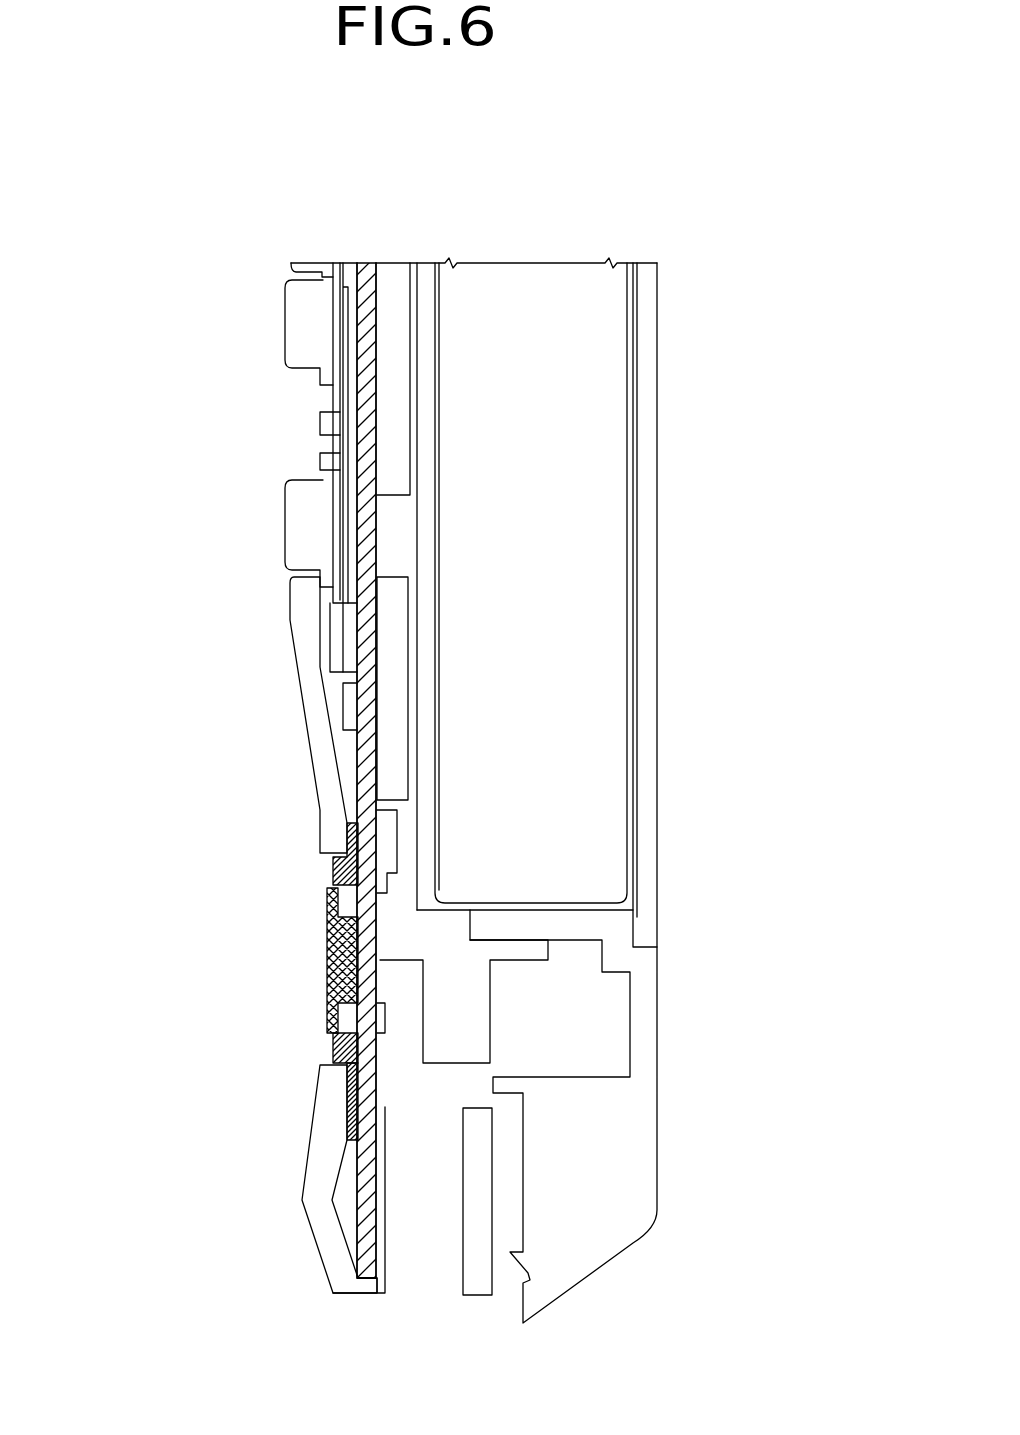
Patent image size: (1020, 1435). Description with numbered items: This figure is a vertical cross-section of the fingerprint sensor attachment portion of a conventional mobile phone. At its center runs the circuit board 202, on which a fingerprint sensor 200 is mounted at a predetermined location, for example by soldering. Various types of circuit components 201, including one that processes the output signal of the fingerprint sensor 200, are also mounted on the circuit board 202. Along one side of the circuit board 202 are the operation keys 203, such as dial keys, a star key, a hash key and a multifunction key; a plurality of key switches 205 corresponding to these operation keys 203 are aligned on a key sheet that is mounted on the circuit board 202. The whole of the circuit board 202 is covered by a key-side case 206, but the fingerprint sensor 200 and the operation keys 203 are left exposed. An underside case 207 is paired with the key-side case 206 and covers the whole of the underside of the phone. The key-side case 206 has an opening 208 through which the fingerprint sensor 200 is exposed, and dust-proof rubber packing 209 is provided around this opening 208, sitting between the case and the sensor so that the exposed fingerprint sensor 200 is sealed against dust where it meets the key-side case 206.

The fingerprint sensor 200 is at (328, 962).
The circuit components 201 is at (393, 673).
The circuit board 202 is at (364, 263).
The operation keys 203 is at (290, 322).
The key switches 205 is at (350, 527).
The key-side case 206 is at (302, 1200).
The underside case 207 is at (660, 850).
The opening 208 is at (337, 1063).
The dust-proof rubber packing 209 is at (330, 1039).